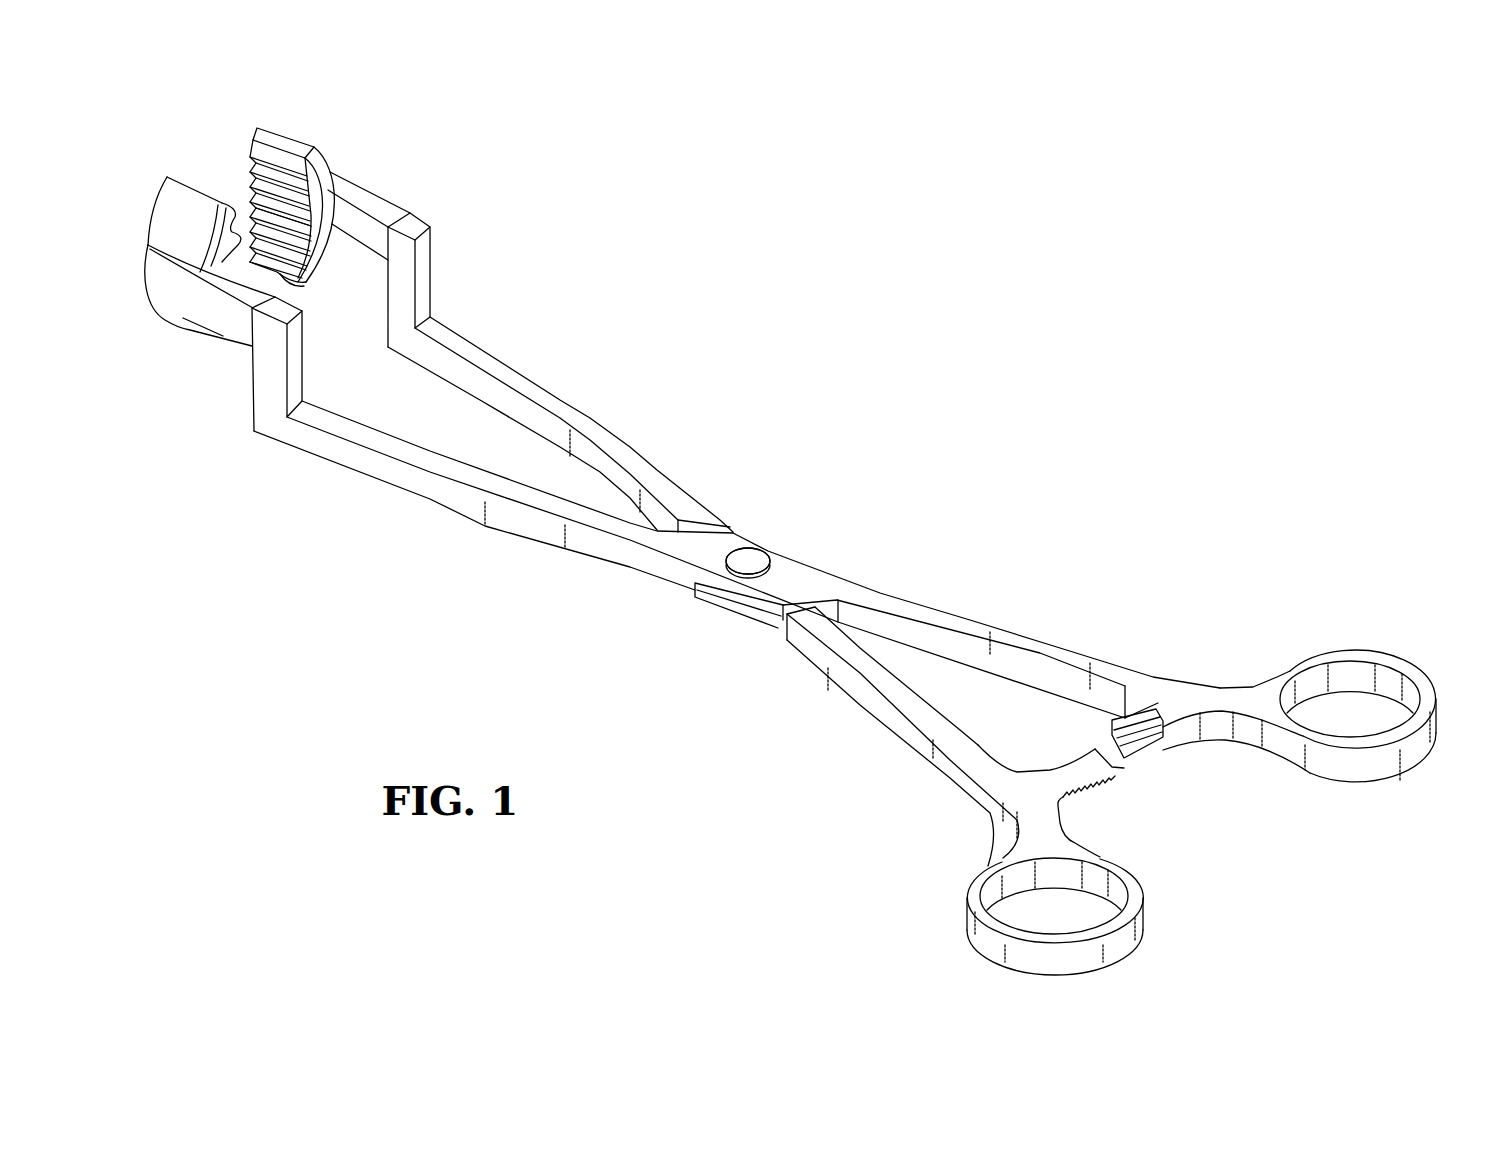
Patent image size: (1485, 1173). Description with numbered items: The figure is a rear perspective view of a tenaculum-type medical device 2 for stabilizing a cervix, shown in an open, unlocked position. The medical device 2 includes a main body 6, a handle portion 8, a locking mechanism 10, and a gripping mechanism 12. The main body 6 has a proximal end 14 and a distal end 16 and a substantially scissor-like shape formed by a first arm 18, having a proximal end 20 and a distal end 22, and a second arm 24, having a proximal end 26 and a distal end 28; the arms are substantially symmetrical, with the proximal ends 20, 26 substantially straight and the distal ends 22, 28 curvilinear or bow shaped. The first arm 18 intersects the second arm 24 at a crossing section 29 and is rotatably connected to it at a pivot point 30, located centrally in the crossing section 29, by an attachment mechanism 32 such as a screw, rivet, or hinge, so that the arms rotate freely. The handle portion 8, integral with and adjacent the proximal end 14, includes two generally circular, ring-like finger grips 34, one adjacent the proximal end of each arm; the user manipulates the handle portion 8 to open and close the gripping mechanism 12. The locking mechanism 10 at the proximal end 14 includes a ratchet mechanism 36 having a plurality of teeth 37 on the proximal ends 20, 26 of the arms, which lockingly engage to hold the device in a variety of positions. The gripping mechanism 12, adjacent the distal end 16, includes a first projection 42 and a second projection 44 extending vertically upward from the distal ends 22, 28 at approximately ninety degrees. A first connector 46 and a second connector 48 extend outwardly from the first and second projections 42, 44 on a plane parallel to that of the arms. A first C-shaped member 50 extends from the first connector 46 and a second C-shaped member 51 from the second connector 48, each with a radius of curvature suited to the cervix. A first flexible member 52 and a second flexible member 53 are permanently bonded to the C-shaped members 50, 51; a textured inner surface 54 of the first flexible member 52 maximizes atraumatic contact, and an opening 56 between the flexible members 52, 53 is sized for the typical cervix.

The medical device 2 is at (527, 173).
The main body 6 is at (617, 405).
The handle portion 8 is at (1245, 885).
The locking mechanism 10 is at (1080, 737).
The gripping mechanism 12 is at (338, 135).
The proximal end 14 is at (1413, 643).
The distal end 16 is at (219, 426).
The first arm 18 is at (945, 623).
The proximal end 20 is at (1108, 667).
The distal end 22 is at (472, 348).
The second arm 24 is at (870, 700).
The proximal end 26 is at (983, 790).
The distal end 28 is at (376, 440).
The crossing section 29 is at (745, 612).
The pivot point 30 is at (750, 561).
The attachment mechanism 32 is at (748, 542).
The finger grip 34 is at (1378, 763).
The ratchet mechanism 36 is at (1123, 768).
The teeth 37 is at (1087, 786).
The first projection 42 is at (422, 267).
The second projection 44 is at (295, 360).
The first connector 46 is at (360, 192).
The second connector 48 is at (233, 290).
The first C-shaped member 50 is at (284, 136).
The second C-shaped member 51 is at (180, 194).
The first flexible member 52 is at (292, 280).
The second flexible member 53 is at (236, 216).
The textured inner surface 54 is at (258, 172).
The opening 56 is at (258, 200).